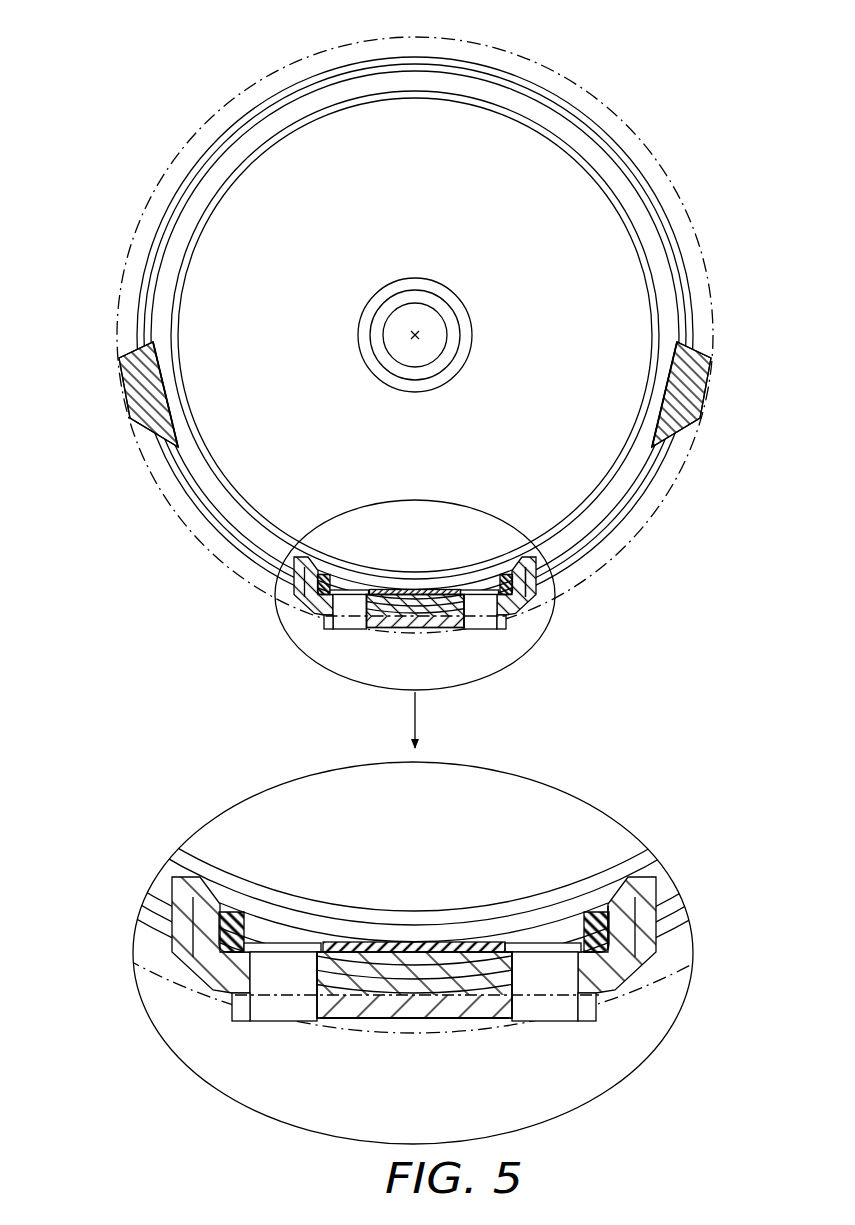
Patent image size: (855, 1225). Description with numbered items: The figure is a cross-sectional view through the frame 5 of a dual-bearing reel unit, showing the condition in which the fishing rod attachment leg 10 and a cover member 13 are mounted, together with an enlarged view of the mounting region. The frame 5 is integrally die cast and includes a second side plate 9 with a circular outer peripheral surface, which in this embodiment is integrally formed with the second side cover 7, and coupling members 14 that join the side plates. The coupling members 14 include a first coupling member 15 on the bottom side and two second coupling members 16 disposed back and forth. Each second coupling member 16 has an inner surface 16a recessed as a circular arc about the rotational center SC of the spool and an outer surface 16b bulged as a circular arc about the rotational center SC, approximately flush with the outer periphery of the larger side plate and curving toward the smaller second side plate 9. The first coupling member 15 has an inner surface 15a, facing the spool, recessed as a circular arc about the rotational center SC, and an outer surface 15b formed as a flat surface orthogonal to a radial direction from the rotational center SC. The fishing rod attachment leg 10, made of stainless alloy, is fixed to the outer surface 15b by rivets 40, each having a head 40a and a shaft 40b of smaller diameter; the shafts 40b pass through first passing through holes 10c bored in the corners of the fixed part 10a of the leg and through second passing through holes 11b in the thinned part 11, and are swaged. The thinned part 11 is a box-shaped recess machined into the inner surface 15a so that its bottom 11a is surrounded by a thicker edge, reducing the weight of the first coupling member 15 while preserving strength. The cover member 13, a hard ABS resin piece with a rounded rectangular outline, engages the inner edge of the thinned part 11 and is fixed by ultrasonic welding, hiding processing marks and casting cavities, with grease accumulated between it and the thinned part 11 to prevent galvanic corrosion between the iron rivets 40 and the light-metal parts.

The frame 5 is at (678, 104).
The second side cover 7 is at (318, 220).
The second side plate 9 is at (668, 207).
The rotational center of the spool SC is at (418, 333).
The second coupling member 16 is at (428, 401).
The inner surface of second coupling member 16a is at (160, 383).
The outer surface of second coupling member 16b is at (120, 385).
The thinned part 11 is at (377, 916).
The bottom of thinned part 11a is at (473, 947).
The second passing through hole 11b is at (310, 977).
The cover member 13 is at (352, 936).
The coupling member 14 is at (547, 597).
The first coupling member 15 is at (427, 583).
The inner surface of first coupling member 15a is at (605, 908).
The outer surface of first coupling member 15b is at (368, 1034).
The fishing rod attachment leg 10 is at (414, 1074).
The fixed part 10a is at (438, 1026).
The first passing through hole 10c is at (285, 1010).
The rivet 40 is at (416, 945).
The head 40a is at (290, 941).
The shaft 40b is at (258, 980).